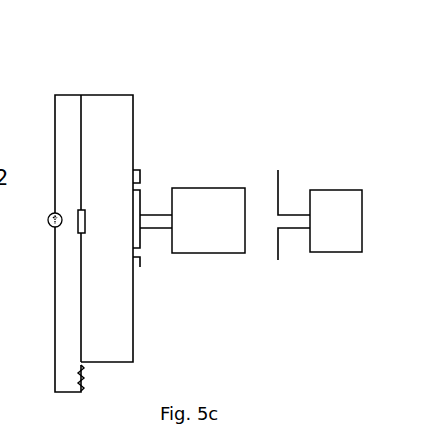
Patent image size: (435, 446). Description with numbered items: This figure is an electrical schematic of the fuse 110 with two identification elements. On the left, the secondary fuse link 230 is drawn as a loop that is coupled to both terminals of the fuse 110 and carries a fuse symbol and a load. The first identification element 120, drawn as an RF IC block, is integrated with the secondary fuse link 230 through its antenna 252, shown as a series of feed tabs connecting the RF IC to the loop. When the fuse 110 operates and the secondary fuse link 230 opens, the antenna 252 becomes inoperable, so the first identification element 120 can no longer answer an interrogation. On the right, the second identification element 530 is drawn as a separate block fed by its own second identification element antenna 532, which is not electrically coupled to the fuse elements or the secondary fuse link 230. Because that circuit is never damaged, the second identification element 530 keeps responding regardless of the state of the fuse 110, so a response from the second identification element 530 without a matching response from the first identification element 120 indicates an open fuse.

The fuse 110 is at (77, 213).
The secondary fuse link 230 is at (128, 127).
The antenna 252 is at (141, 268).
The first identification element 120 is at (203, 255).
The second identification element antenna 532 is at (274, 264).
The second identification element 530 is at (340, 253).